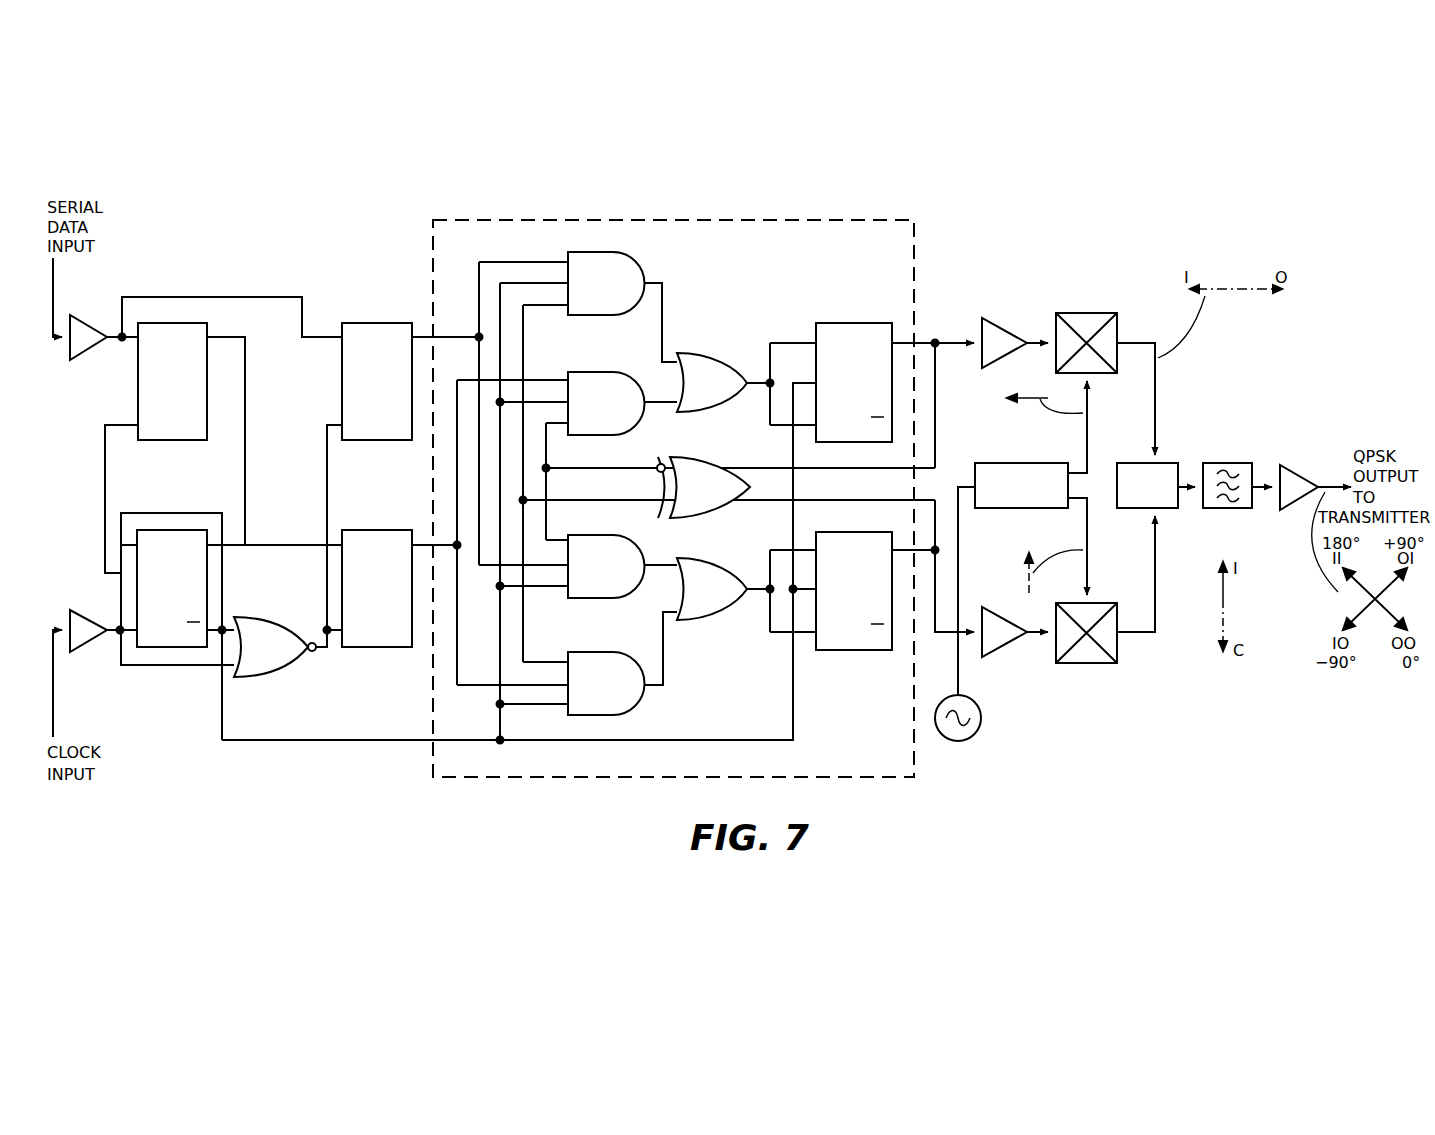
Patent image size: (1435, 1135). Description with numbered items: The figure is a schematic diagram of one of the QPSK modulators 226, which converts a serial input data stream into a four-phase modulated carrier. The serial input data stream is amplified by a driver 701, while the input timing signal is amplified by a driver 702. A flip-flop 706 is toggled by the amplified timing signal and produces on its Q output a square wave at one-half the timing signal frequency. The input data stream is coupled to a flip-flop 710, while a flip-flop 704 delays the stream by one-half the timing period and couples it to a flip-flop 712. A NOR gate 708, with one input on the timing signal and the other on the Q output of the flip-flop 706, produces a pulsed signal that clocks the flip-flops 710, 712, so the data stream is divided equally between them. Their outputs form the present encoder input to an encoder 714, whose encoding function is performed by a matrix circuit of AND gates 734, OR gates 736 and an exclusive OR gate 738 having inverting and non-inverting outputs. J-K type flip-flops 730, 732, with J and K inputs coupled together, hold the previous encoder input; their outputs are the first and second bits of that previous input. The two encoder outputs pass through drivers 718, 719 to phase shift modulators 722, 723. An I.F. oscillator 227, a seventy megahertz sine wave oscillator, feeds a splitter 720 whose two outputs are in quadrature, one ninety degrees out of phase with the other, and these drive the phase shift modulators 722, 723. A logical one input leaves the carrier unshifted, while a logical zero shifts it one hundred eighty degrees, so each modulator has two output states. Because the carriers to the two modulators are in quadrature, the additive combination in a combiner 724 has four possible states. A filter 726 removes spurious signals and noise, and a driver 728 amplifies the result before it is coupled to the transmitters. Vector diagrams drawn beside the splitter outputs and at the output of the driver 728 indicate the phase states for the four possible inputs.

The driver 701 is at (86, 356).
The driver 702 is at (88, 616).
The flip-flop 704 is at (168, 431).
The flip-flop 706 is at (174, 536).
The NOR gate 708 is at (280, 624).
The flip-flop 710 is at (344, 378).
The flip-flop 712 is at (385, 532).
The encoder 714 is at (683, 219).
The QPSK modulator 226 is at (420, 808).
The AND gates 734 is at (630, 272).
The OR gates 736 is at (706, 360).
The exclusive OR gate 738 is at (706, 512).
The flip-flop 730 is at (857, 327).
The flip-flop 732 is at (830, 650).
The driver 718 is at (1005, 335).
The driver 719 is at (1007, 624).
The splitter 720 is at (1010, 464).
The phase shift modulator 722 is at (1118, 326).
The phase shift modulator 723 is at (1092, 658).
The combiner 724 is at (1170, 464).
The filter 726 is at (1233, 464).
The driver 728 is at (1298, 472).
The I.F. oscillator 227 is at (951, 742).